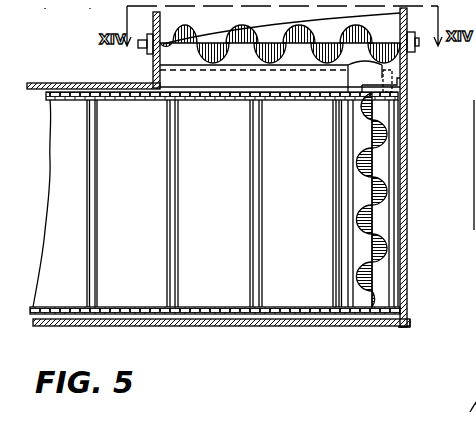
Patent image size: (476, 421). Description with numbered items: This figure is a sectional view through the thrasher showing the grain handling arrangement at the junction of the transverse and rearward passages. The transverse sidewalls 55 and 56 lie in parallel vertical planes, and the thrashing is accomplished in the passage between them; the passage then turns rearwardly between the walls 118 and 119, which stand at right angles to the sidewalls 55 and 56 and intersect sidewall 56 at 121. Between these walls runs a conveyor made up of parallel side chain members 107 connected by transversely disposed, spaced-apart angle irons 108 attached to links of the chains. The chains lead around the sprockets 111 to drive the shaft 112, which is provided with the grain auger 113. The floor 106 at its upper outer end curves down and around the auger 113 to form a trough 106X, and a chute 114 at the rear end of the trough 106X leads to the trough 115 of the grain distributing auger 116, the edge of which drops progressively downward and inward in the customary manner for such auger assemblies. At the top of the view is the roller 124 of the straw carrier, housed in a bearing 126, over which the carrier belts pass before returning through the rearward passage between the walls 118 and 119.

The sidewall 55 is at (48, 67).
The sidewall 56 is at (178, 326).
The floor 106 is at (86, 203).
The trough 106X is at (408, 270).
The side chain member 107 is at (120, 100).
The angle iron 108 is at (170, 250).
The sprocket 111 is at (352, 100).
The shaft 112 is at (374, 217).
The grain auger 113 is at (384, 253).
The chute 114 is at (374, 76).
The trough 115 is at (280, 44).
The grain distributing auger 116 is at (189, 27).
The wall 118 is at (157, 57).
The wall 119 is at (408, 130).
The intersection 121 is at (411, 325).
The roller 124 is at (90, 5).
The bearing 126 is at (43, 5).